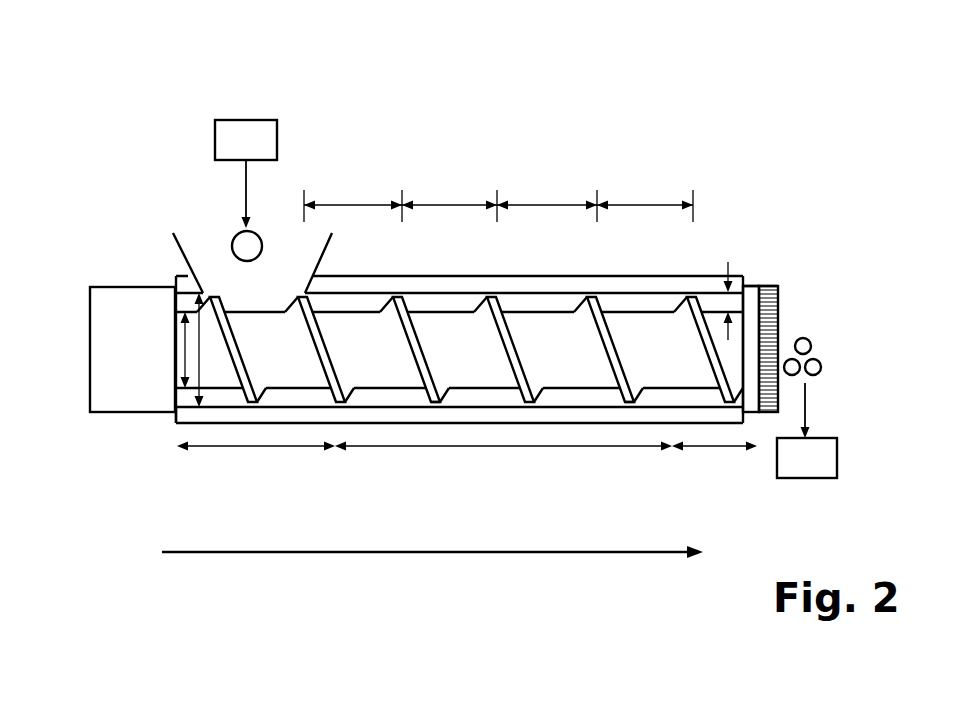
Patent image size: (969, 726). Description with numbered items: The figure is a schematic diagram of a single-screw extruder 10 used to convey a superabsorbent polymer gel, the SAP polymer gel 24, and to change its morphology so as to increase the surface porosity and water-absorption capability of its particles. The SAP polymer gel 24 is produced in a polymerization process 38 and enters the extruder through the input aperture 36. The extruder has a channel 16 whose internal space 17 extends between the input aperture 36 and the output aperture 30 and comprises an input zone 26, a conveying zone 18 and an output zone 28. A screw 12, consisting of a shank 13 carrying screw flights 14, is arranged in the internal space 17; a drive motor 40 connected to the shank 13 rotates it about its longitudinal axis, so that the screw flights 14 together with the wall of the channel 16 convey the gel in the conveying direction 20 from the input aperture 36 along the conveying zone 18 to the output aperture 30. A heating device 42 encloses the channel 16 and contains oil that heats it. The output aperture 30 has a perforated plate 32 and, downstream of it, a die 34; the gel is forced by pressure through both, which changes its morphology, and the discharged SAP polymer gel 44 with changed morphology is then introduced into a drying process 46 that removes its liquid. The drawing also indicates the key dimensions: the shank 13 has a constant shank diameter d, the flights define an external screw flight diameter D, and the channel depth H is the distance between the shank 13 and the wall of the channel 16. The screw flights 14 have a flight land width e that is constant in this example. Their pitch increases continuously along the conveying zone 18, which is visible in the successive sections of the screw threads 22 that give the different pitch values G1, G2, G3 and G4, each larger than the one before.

The single-screw extruder 10 is at (331, 125).
The screw 12 is at (459, 418).
The shank 13 is at (540, 365).
The screw flights 14 is at (596, 368).
The channel 16 is at (385, 412).
The internal space 17 is at (423, 403).
The conveying zone 18 is at (473, 447).
The conveying direction 20 is at (440, 555).
The screw threads 22 is at (633, 407).
The SAP polymer gel 24 is at (242, 245).
The input zone 26 is at (253, 447).
The output zone 28 is at (712, 447).
The output aperture 30 is at (768, 272).
The perforated plate 32 is at (752, 313).
The die 34 is at (770, 297).
The input aperture 36 is at (190, 238).
The polymerization process 38 is at (235, 128).
The drive motor 40 is at (116, 295).
The heating device 42 is at (178, 420).
The SAP polymer gel with changed morphology 44 is at (805, 345).
The drying process 46 is at (825, 470).
The shank diameter d is at (178, 350).
The external screw flight diameter D is at (178, 368).
The channel depth H is at (719, 294).
The flight land width e is at (335, 345).
The pitch value G1 is at (353, 201).
The pitch value G2 is at (449, 201).
The pitch value G3 is at (547, 201).
The pitch value G4 is at (645, 201).